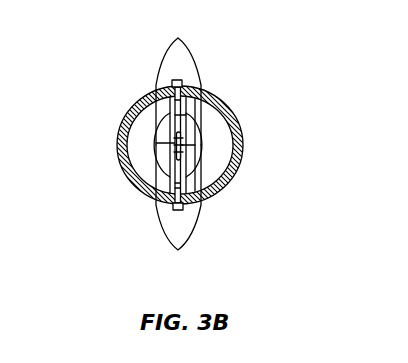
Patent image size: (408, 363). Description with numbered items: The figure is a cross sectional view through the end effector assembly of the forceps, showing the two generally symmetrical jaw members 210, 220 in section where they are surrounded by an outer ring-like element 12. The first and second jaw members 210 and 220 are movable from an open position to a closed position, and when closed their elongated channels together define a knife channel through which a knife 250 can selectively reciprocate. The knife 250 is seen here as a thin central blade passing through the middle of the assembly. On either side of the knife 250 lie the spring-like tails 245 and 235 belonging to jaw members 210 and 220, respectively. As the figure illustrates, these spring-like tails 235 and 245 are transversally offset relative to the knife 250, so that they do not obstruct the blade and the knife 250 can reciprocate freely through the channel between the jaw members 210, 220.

The annular ring 12 is at (213, 96).
The first jaw member 210 is at (182, 39).
The second jaw member 220 is at (178, 246).
The spring-like tail 235 is at (184, 168).
The spring-like tail 245 is at (172, 119).
The knife 250 is at (184, 145).